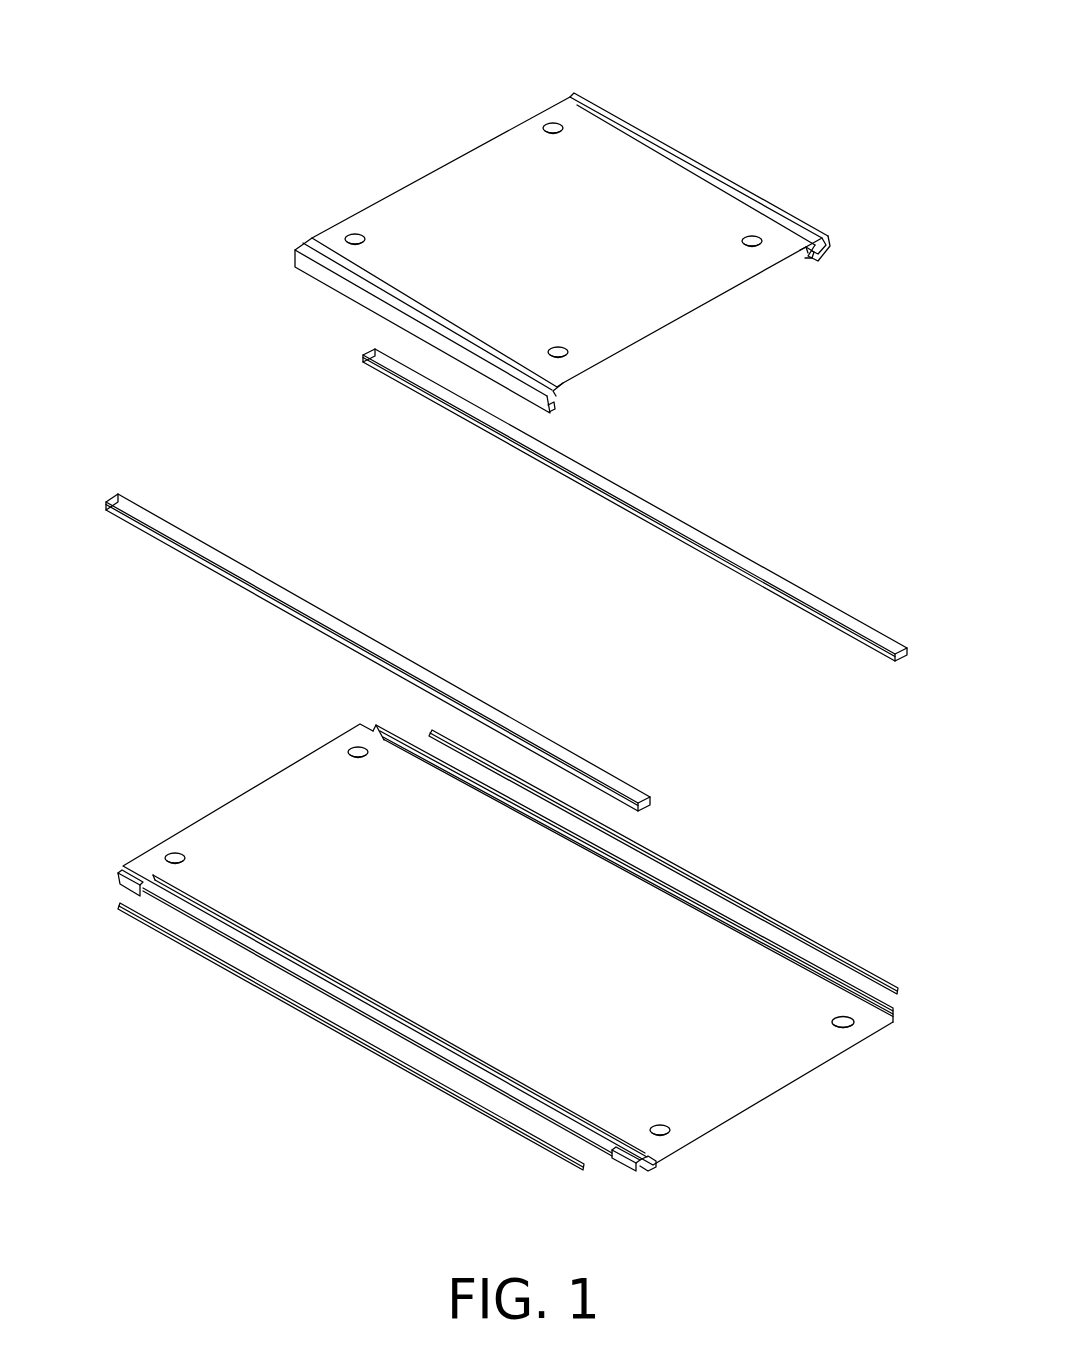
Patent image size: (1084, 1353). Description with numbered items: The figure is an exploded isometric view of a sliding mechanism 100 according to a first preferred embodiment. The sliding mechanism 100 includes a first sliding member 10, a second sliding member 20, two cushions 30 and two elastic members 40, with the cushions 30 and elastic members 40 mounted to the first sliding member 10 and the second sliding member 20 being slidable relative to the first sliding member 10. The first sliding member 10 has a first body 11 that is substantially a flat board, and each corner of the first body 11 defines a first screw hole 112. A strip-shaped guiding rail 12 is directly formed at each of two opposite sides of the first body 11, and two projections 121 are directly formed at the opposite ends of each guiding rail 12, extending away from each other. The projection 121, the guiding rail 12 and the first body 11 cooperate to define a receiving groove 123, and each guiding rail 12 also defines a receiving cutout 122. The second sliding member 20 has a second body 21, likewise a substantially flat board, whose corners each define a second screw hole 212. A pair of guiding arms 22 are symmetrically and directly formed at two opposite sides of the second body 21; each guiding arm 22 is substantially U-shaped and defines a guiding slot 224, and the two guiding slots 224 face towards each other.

The sliding mechanism 100 is at (545, 26).
The first sliding member 10 is at (278, 766).
The first body 11 is at (250, 828).
The guiding rail 12 is at (118, 884).
The first screw hole 112 is at (848, 1030).
The projection 121 is at (640, 1168).
The receiving cutout 122 is at (605, 1148).
The receiving groove 123 is at (650, 1163).
The second sliding member 20 is at (658, 140).
The second body 21 is at (484, 170).
The second screw hole 212 is at (753, 238).
The guiding arm 22 is at (826, 250).
The guiding slot 224 is at (808, 258).
The cushion 30 is at (670, 520).
The elastic member 40 is at (690, 875).